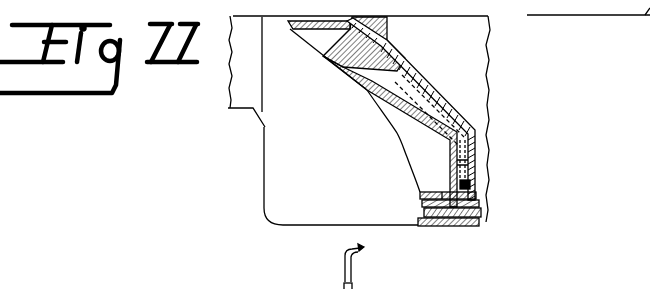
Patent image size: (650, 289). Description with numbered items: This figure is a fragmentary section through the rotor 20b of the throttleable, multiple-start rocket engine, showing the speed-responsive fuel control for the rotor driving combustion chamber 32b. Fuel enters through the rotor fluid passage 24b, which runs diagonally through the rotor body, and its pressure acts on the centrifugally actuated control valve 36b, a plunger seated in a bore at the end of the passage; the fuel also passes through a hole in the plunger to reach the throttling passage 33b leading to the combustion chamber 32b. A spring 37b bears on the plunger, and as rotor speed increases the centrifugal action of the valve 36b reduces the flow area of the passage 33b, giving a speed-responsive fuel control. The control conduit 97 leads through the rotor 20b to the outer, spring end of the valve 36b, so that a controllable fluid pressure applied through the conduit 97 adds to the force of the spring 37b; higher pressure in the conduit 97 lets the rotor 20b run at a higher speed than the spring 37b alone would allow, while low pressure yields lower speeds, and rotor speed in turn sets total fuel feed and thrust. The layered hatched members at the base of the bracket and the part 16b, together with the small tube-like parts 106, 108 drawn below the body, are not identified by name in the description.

The control conduit 97 is at (387, 40).
The rotor fluid passage 24b is at (413, 77).
The rotor driving combustion chamber 32b is at (390, 131).
The throttling passage 33b is at (458, 168).
The centrifugally actuated control valve 36b is at (470, 168).
The spring 37b is at (471, 185).
The rotor 20b is at (490, 203).
The housing 16b is at (486, 222).
The tube 106 is at (309, 286).
The fitting 108 is at (376, 284).